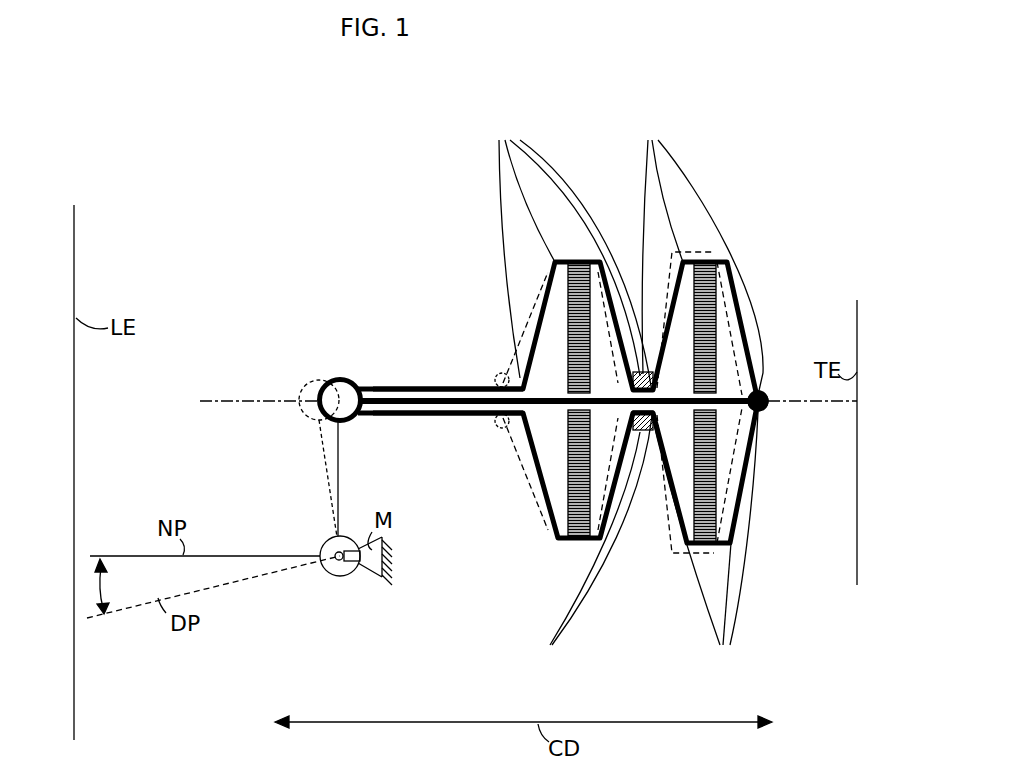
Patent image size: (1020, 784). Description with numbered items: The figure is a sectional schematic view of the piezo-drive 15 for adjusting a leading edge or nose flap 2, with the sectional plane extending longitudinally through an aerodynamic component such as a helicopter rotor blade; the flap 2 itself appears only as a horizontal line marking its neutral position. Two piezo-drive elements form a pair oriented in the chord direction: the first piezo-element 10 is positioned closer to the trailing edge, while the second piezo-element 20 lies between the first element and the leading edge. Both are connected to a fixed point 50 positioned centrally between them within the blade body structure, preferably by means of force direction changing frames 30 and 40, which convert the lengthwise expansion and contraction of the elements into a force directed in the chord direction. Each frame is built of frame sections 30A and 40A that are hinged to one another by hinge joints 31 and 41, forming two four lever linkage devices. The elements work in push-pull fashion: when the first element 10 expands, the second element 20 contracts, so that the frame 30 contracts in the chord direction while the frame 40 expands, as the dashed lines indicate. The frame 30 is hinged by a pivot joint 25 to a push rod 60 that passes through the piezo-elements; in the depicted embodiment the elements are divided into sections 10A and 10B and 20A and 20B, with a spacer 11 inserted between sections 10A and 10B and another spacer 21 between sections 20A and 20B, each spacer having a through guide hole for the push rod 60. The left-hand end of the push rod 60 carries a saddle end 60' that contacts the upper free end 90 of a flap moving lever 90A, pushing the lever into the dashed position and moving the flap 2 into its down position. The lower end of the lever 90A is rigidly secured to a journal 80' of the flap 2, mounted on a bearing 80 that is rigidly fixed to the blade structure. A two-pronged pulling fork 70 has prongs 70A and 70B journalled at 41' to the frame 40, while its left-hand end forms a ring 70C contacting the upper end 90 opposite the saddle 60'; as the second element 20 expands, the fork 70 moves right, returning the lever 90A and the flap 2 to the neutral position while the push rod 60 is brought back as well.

The nose flap 2 is at (253, 522).
The first piezo-element 10 is at (692, 349).
The section of first piezo-element 10A is at (707, 262).
The section of first piezo-element 10B is at (714, 545).
The spacer 11 is at (743, 482).
The piezo-drive 15 is at (608, 98).
The second piezo-element 20 is at (569, 351).
The section of second piezo-element 20A is at (572, 262).
The section of second piezo-element 20B is at (586, 512).
The spacer 21 is at (560, 426).
The pivot joint 25 is at (762, 395).
The force direction changing frame 30 is at (751, 264).
The frame section 30A is at (742, 317).
The hinge joint 31 is at (698, 394).
The force direction changing frame 40 is at (527, 272).
The frame section 40A is at (535, 330).
The hinge joint 41 is at (571, 394).
The hinge 41' is at (482, 399).
The fixed point 50 is at (640, 432).
The push rod 60 is at (431, 252).
The saddle end 60' is at (366, 412).
The two-pronged pulling fork 70 is at (368, 357).
The prong 70A is at (413, 386).
The prong 70B is at (429, 415).
The ring 70C is at (339, 372).
The bearing 80 is at (324, 608).
The journal 80' is at (370, 580).
The upper free end 90 is at (314, 384).
The flap moving lever 90A is at (341, 466).